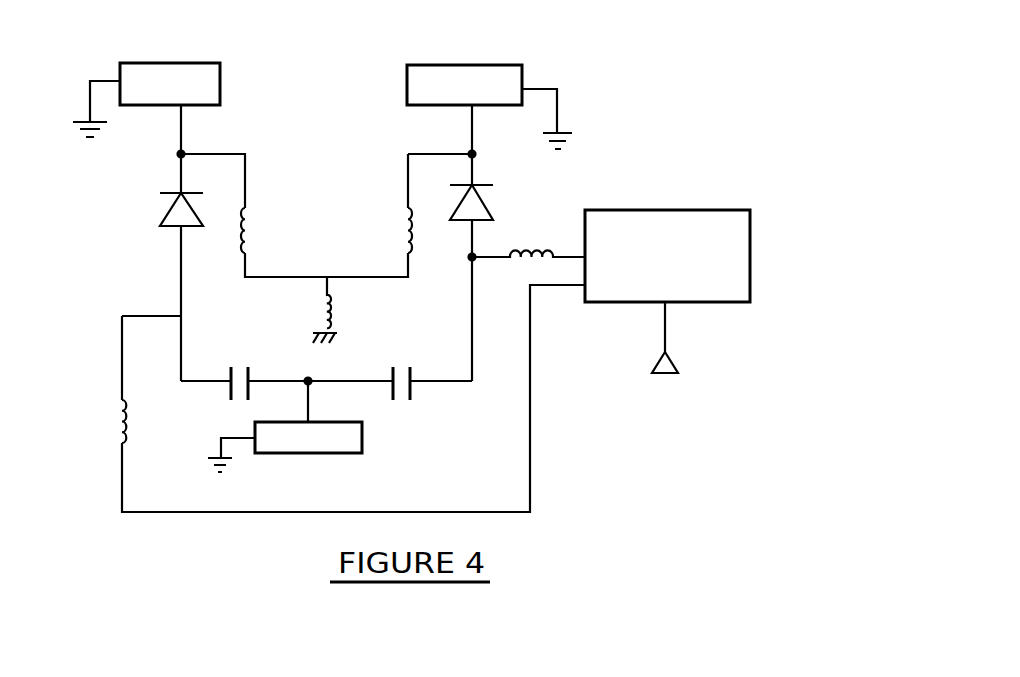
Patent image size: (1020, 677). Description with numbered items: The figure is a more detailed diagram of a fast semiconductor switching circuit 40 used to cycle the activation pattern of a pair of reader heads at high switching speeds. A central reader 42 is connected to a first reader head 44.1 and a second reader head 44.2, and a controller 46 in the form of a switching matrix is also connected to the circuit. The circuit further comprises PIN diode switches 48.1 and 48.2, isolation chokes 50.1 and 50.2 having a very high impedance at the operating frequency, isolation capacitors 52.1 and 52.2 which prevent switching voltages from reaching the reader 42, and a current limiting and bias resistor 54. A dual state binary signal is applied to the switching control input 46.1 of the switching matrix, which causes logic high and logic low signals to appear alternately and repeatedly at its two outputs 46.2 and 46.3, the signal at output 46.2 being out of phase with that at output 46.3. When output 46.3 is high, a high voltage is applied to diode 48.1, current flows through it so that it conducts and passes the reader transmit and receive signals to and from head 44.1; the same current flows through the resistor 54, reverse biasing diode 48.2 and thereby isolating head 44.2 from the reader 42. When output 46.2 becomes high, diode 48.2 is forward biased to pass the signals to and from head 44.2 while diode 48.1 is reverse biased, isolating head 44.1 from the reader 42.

The circuit 40 is at (714, 107).
The central reader 42 is at (415, 470).
The reader head 44.1 is at (264, 35).
The reader head 44.2 is at (538, 39).
The controller 46 is at (752, 257).
The switching control input 46.1 is at (668, 334).
The output 46.2 is at (585, 252).
The output 46.3 is at (583, 288).
The PIN diode switch 48.1 is at (165, 211).
The PIN diode switch 48.2 is at (489, 210).
The isolation choke 50.1 is at (250, 245).
The isolation choke 50.2 is at (401, 238).
The isolation capacitor 52.1 is at (242, 366).
The isolation capacitor 52.2 is at (400, 366).
The current limiting and bias resistor 54 is at (336, 307).